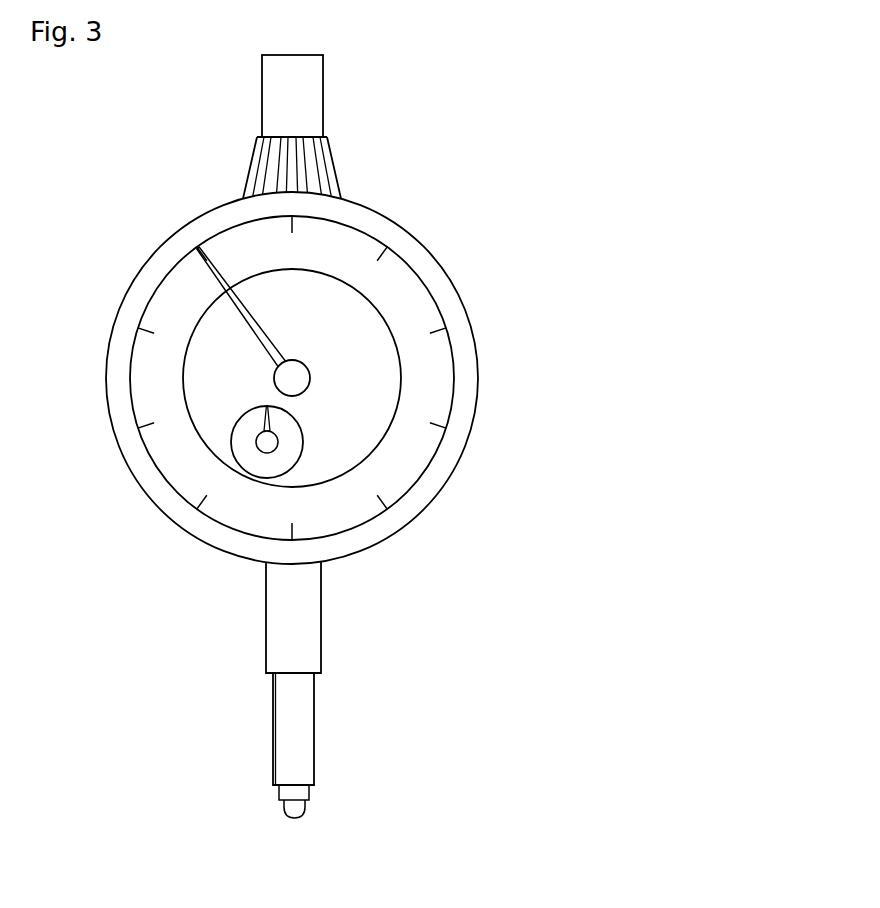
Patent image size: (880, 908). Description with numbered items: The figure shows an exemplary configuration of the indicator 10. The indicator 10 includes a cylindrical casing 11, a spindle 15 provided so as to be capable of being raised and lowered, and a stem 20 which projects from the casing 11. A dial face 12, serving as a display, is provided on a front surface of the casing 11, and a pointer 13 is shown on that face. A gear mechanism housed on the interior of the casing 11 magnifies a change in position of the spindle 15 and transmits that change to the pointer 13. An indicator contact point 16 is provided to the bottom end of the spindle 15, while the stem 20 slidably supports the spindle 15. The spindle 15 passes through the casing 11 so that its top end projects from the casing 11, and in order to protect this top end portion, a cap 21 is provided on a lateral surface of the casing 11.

The indicator 10 is at (487, 168).
The casing 11 is at (138, 297).
The dial face 12 is at (222, 431).
The pointer 13 is at (252, 304).
The spindle 15 is at (303, 730).
The indicator contact point 16 is at (302, 812).
The stem 20 is at (308, 617).
The cap 21 is at (312, 107).